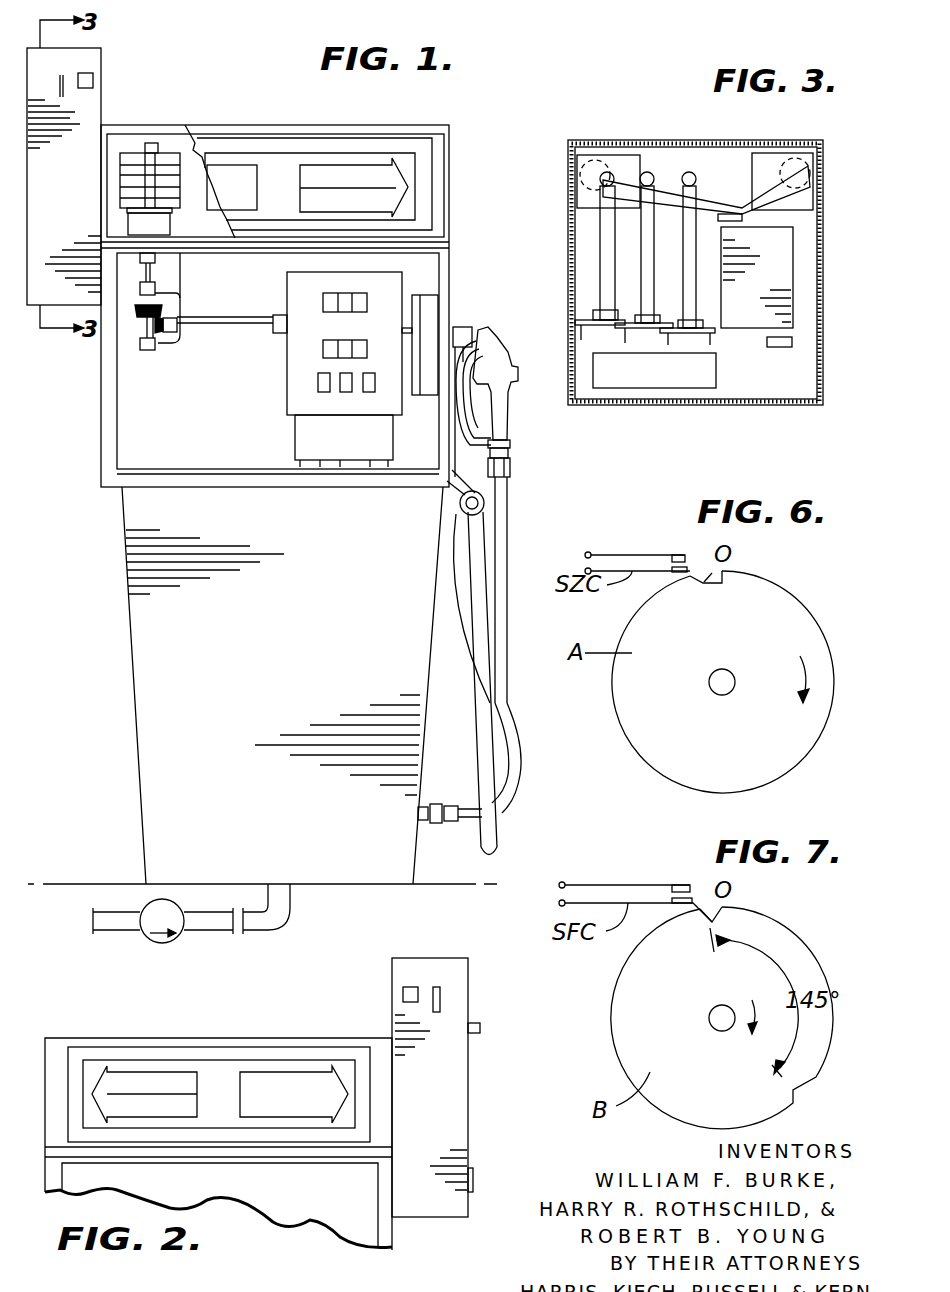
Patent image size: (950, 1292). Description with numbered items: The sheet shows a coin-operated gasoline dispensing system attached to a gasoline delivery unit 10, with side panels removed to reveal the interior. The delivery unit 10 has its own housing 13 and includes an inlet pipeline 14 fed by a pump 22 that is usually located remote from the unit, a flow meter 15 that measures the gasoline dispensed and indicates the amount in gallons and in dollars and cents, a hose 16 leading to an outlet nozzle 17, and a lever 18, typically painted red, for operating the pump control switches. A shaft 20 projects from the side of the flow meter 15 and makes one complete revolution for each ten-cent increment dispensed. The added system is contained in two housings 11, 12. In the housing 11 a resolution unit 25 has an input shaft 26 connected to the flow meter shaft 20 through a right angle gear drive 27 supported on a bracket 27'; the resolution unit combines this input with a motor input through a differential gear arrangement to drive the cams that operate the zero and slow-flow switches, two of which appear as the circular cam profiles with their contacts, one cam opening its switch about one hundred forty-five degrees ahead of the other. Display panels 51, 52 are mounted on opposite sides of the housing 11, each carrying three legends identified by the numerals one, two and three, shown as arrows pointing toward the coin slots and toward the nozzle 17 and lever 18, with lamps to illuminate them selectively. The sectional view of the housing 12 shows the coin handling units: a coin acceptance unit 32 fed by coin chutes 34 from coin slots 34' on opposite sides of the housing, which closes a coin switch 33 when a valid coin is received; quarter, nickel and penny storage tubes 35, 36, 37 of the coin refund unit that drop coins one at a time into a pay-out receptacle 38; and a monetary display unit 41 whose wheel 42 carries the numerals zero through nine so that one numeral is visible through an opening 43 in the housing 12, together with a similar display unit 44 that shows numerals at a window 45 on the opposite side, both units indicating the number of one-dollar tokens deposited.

In FIG. 1, the gasoline delivery unit 10 is at (103, 572).
In FIG. 1, the housing 11 is at (263, 130).
In FIG. 2, the housing 11 is at (127, 1038).
In FIG. 1, the housing 12 is at (90, 52).
In FIG. 3, the housing 12 is at (800, 142).
In FIG. 2, the housing 12 is at (445, 1080).
In FIG. 1, the housing of the gasoline delivery unit 13 is at (100, 486).
In FIG. 1, the inlet pipeline 14 is at (285, 918).
In FIG. 1, the flow meter 15 is at (310, 433).
In FIG. 1, the hose 16 is at (509, 497).
In FIG. 1, the outlet nozzle 17 is at (492, 360).
In FIG. 1, the lever 18 is at (462, 333).
In FIG. 1, the shaft 20 is at (250, 325).
In FIG. 1, the pump 22 is at (150, 936).
In FIG. 1, the resolution unit 25 is at (172, 148).
In FIG. 1, the input shaft 26 is at (150, 280).
In FIG. 1, the right angle gear drive 27 is at (150, 326).
In FIG. 1, the bracket 27' is at (188, 352).
In FIG. 3, the coin acceptance unit 32 is at (775, 260).
In FIG. 3, the coin switch 33 is at (778, 352).
In FIG. 3, the coin chutes 34 is at (706, 162).
In FIG. 1, the coin slots 34' is at (113, 94).
In FIG. 3, the coin slots 34' is at (690, 199).
In FIG. 2, the coin slots 34' is at (484, 992).
In FIG. 3, the quarter storage tube 35 is at (600, 232).
In FIG. 3, the nickel storage tube 36 is at (648, 268).
In FIG. 3, the penny storage tube 37 is at (693, 283).
In FIG. 3, the pay-out receptacle 38 is at (632, 375).
In FIG. 3, the monetary display unit 41 is at (622, 152).
In FIG. 3, the wheel 42 is at (594, 155).
In FIG. 1, the opening 43 is at (93, 75).
In FIG. 3, the display unit 44 is at (768, 160).
In FIG. 2, the window 45 is at (403, 995).
In FIG. 1, the display panel 51 is at (410, 150).
In FIG. 2, the display panel 52 is at (213, 1065).